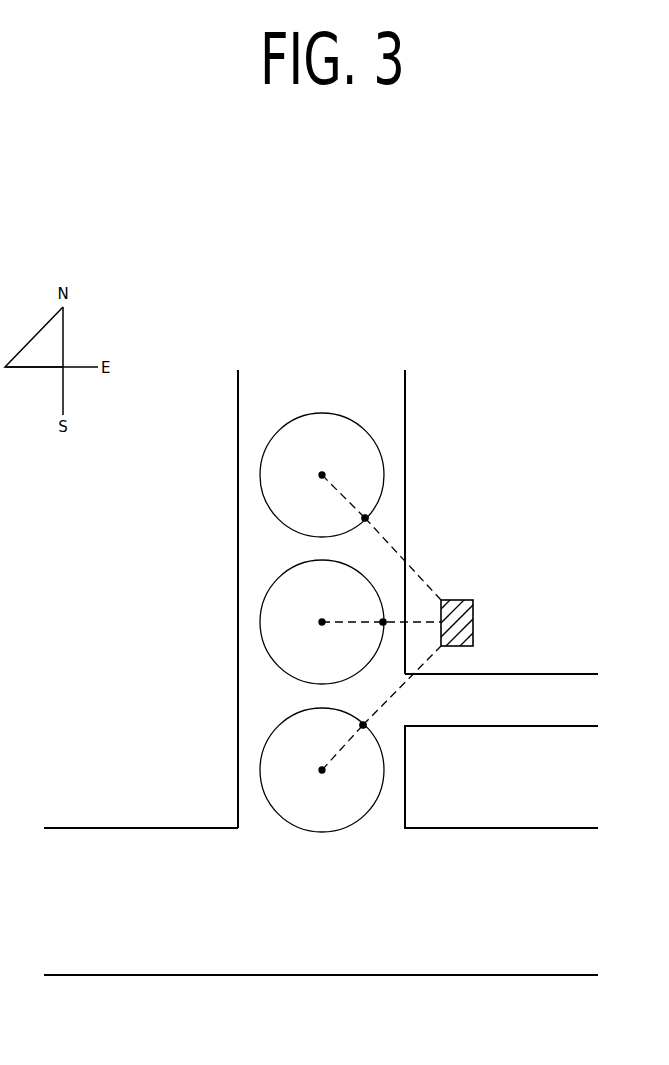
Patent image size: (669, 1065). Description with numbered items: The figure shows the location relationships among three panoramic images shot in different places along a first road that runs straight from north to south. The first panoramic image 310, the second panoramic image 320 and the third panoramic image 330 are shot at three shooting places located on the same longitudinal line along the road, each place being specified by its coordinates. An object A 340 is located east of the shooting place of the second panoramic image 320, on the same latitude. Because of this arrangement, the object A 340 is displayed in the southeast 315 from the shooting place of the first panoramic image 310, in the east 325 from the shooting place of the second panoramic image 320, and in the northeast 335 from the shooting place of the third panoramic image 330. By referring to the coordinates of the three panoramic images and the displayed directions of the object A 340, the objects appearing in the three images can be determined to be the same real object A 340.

The first panoramic image 310 is at (268, 447).
The southeast direction 315 is at (365, 518).
The second panoramic image 320 is at (260, 622).
The east direction 325 is at (383, 622).
The third panoramic image 330 is at (260, 770).
The northeast direction 335 is at (363, 725).
The object A 340 is at (473, 622).